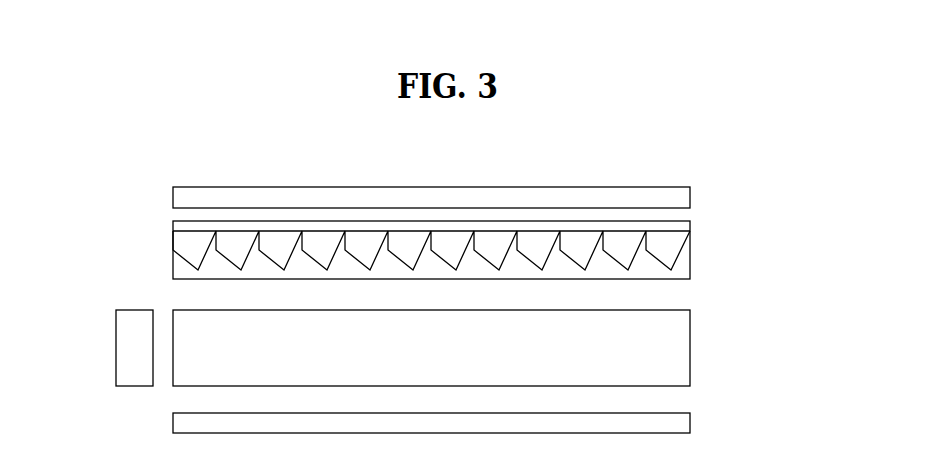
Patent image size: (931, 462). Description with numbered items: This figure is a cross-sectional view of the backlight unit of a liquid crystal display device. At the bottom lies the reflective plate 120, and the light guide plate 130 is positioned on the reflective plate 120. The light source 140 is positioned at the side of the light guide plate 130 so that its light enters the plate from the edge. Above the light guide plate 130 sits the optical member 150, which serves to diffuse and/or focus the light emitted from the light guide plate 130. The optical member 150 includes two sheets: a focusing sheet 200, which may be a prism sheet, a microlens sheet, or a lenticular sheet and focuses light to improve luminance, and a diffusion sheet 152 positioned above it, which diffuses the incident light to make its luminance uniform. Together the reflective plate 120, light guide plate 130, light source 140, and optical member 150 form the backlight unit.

The diffusion sheet 152 is at (690, 198).
The focusing sheet 200 is at (712, 237).
The optical member 150 is at (810, 185).
The light source 140 is at (123, 350).
The light guide plate 130 is at (680, 353).
The reflective plate 120 is at (680, 424).